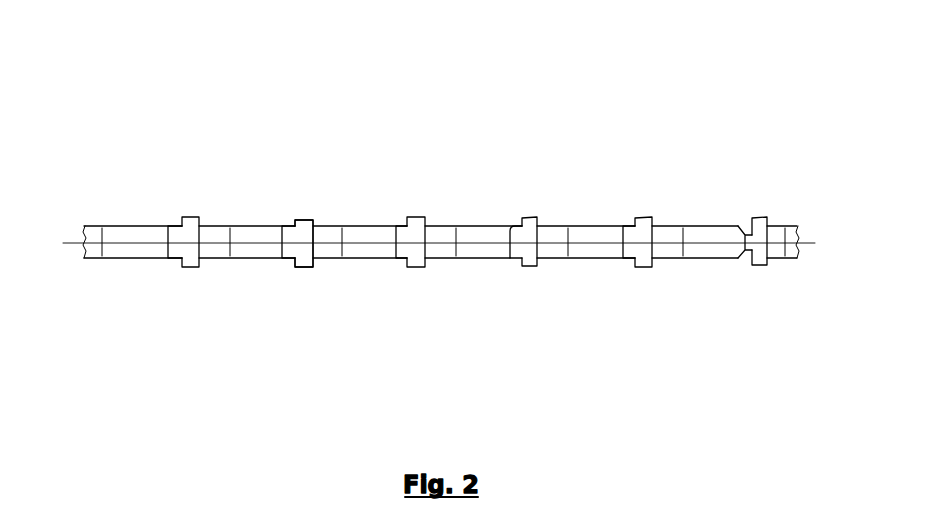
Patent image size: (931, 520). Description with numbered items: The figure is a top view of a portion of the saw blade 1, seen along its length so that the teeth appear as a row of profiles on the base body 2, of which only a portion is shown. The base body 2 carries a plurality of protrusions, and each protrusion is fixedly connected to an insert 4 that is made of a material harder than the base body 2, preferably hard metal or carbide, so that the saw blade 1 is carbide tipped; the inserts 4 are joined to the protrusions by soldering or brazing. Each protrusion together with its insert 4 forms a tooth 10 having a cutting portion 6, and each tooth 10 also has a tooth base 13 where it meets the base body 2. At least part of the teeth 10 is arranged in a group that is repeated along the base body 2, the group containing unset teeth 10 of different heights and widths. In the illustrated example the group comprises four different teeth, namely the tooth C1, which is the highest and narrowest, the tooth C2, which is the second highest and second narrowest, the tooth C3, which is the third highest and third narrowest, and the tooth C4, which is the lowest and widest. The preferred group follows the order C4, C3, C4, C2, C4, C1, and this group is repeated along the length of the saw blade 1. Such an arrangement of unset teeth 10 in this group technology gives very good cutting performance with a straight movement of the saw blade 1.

The saw blade 1 is at (413, 125).
The base body 2 is at (243, 228).
The insert 4 is at (308, 220).
The cutting portion 6 is at (477, 221).
The tooth 10 is at (190, 268).
The tooth base 13 is at (110, 228).
The tooth C1 is at (743, 260).
The tooth C2 is at (517, 260).
The tooth C3 is at (290, 260).
The tooth C4 is at (176, 260).